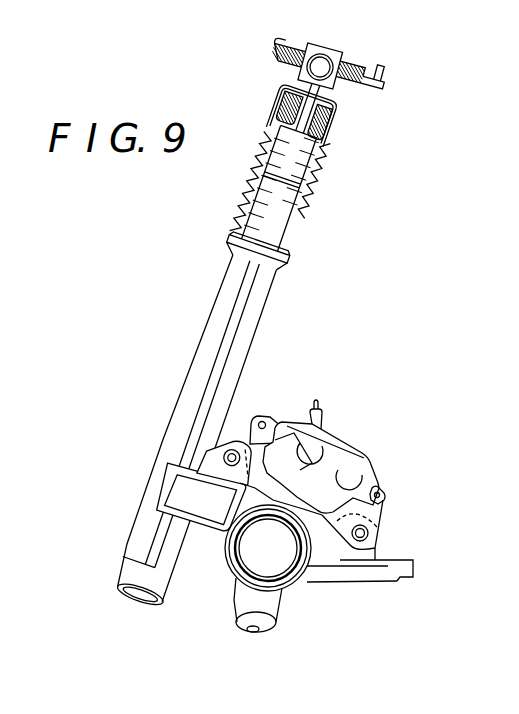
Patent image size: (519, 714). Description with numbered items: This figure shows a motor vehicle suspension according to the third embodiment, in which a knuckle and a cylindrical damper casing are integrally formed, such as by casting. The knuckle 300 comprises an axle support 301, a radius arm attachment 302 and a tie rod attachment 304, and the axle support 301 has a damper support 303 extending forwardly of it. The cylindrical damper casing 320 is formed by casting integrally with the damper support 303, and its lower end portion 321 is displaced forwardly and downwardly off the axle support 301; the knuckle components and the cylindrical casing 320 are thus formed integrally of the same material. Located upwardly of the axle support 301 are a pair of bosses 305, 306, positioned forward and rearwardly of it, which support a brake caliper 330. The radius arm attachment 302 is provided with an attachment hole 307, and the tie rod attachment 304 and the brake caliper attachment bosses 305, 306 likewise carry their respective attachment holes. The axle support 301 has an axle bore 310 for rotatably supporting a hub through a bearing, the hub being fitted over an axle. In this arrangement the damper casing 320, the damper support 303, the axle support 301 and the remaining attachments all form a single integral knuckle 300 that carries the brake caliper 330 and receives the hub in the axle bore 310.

The knuckle 300 is at (341, 572).
The axle support 301 is at (232, 570).
The radius arm attachment 302 is at (247, 601).
The damper support 303 is at (178, 491).
The tie rod attachment 304 is at (412, 570).
The boss 305 is at (222, 456).
The boss 306 is at (370, 533).
The attachment hole 307 is at (253, 632).
The axle bore 310 is at (288, 582).
The cylindrical damper casing 320 is at (257, 322).
The lower end portion 321 is at (128, 577).
The brake caliper 330 is at (318, 458).